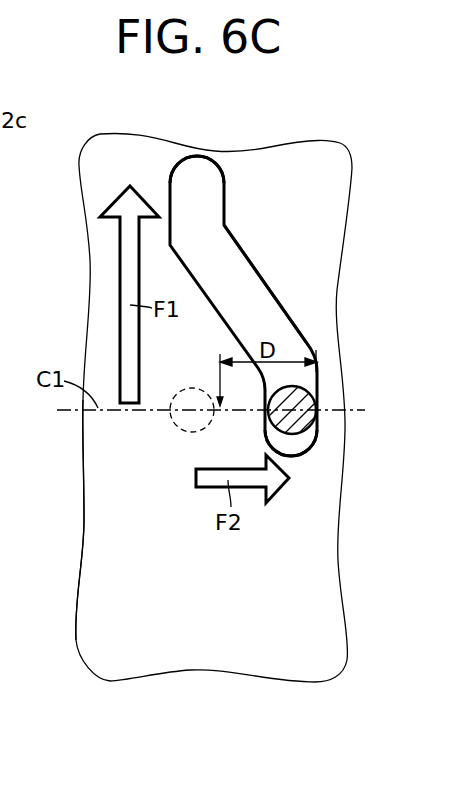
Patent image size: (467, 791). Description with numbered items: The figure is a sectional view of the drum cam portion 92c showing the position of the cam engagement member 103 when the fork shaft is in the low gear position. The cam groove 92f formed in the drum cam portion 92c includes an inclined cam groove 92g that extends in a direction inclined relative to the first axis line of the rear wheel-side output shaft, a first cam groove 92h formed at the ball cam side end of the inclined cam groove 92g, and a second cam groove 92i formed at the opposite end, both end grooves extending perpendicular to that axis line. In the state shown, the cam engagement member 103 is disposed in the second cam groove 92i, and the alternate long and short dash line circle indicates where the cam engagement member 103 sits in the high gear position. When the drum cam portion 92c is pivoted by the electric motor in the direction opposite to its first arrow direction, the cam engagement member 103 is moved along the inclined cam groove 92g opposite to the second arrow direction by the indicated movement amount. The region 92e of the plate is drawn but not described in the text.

The drum cam portion 92c is at (365, 140).
The plate body portion 92e is at (122, 597).
The cam groove 92f is at (277, 244).
The inclined cam groove 92g is at (274, 281).
The first cam groove 92h is at (252, 161).
The second cam groove 92i is at (291, 450).
The cam engagement member 103 is at (177, 428).